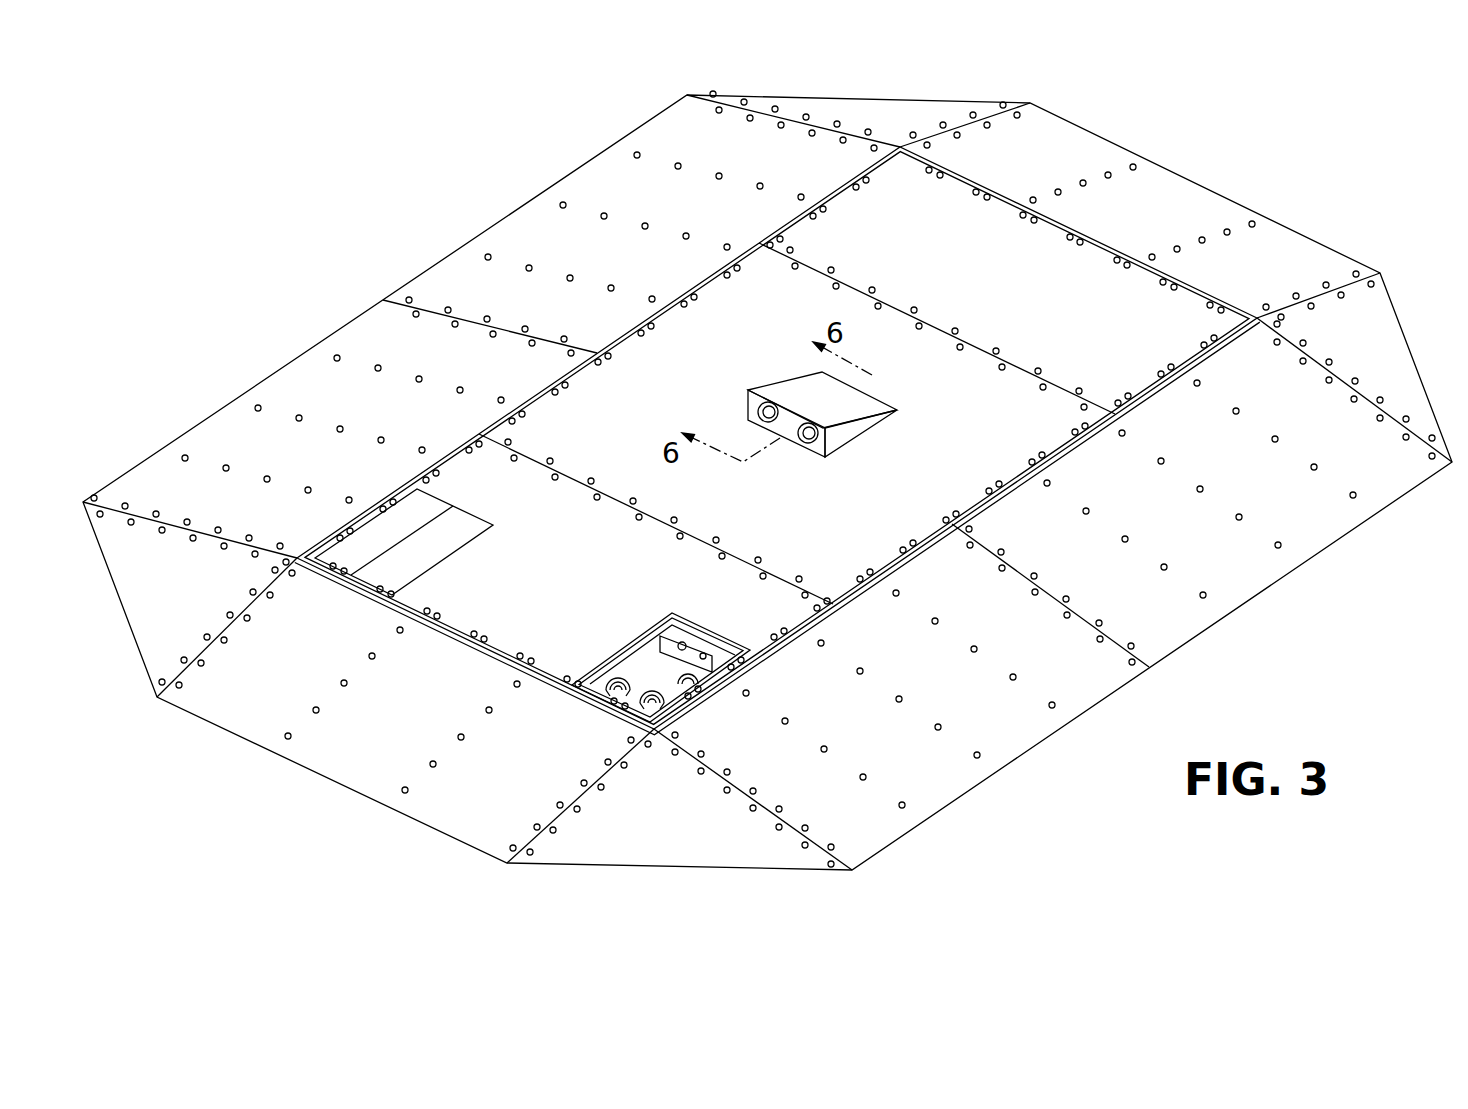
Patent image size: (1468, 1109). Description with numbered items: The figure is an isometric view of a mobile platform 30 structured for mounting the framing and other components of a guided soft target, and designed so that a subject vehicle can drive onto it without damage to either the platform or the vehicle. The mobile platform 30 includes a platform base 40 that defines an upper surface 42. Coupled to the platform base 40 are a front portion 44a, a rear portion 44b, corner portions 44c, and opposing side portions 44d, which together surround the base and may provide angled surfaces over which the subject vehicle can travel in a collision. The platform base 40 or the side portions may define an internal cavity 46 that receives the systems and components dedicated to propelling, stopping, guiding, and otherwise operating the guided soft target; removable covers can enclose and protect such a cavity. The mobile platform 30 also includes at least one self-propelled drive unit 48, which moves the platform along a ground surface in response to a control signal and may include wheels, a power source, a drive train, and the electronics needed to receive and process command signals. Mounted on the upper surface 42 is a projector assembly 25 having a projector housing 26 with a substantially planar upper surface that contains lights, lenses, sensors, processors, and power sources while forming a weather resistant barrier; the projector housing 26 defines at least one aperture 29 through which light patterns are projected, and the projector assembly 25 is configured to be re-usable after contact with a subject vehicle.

The mobile platform 30 is at (1299, 121).
The platform base 40 is at (1168, 307).
The upper surface 42 is at (1092, 300).
The front portion 44a is at (350, 752).
The rear portion 44b is at (1093, 147).
The corner portion 44c is at (862, 100).
The opposing side portion 44d is at (457, 278).
The internal cavity 46 is at (488, 522).
The self-propelled drive unit 48 is at (632, 627).
The projector assembly 25 is at (838, 420).
The projector housing 26 is at (783, 392).
The aperture 29 is at (803, 440).